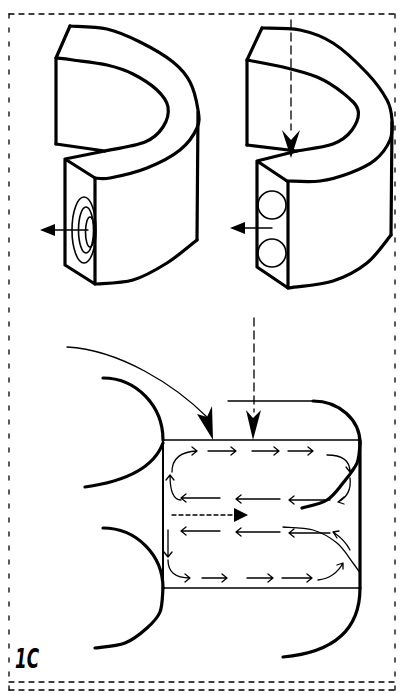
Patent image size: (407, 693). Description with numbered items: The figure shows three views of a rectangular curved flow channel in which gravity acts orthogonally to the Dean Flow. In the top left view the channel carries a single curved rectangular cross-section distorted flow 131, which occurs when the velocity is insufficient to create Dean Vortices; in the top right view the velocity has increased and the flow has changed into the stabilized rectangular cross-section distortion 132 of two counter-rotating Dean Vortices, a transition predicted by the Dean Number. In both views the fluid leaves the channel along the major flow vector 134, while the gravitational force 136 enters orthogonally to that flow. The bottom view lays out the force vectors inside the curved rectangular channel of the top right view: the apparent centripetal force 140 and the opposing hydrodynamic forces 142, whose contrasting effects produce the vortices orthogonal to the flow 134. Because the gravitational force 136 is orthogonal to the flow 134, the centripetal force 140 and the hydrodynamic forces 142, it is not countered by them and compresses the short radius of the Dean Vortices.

The curved rectangular cross-section distorted flow 131 is at (72, 211).
The stabilized rectangular cross-section distortion 132 is at (287, 203).
The major flow vector 134 is at (60, 235).
The gravitational force 136 is at (283, 86).
The centripetal force 140 is at (223, 520).
The hydrodynamic forces 142 is at (269, 540).